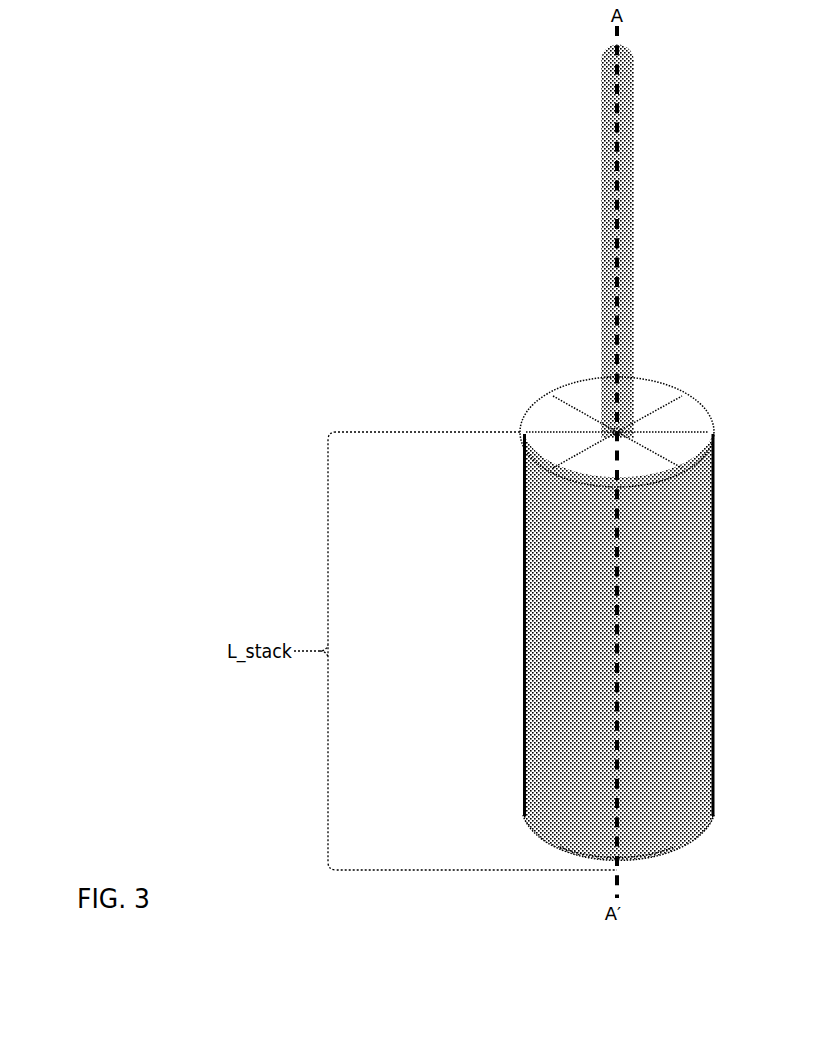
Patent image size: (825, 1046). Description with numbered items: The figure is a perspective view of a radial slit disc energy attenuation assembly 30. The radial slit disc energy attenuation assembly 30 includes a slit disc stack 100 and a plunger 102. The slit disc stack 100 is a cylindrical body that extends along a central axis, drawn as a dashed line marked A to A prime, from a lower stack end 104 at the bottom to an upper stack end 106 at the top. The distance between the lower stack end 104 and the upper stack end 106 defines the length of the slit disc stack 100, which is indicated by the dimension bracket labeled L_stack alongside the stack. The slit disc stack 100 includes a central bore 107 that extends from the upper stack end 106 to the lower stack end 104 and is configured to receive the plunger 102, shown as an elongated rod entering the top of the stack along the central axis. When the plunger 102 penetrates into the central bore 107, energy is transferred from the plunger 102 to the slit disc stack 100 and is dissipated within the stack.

The radial slit disc energy attenuation assembly 30 is at (503, 218).
The slit disc stack 100 is at (718, 607).
The plunger 102 is at (633, 202).
The lower stack end 104 is at (687, 858).
The upper stack end 106 is at (578, 382).
The central bore 107 is at (632, 437).